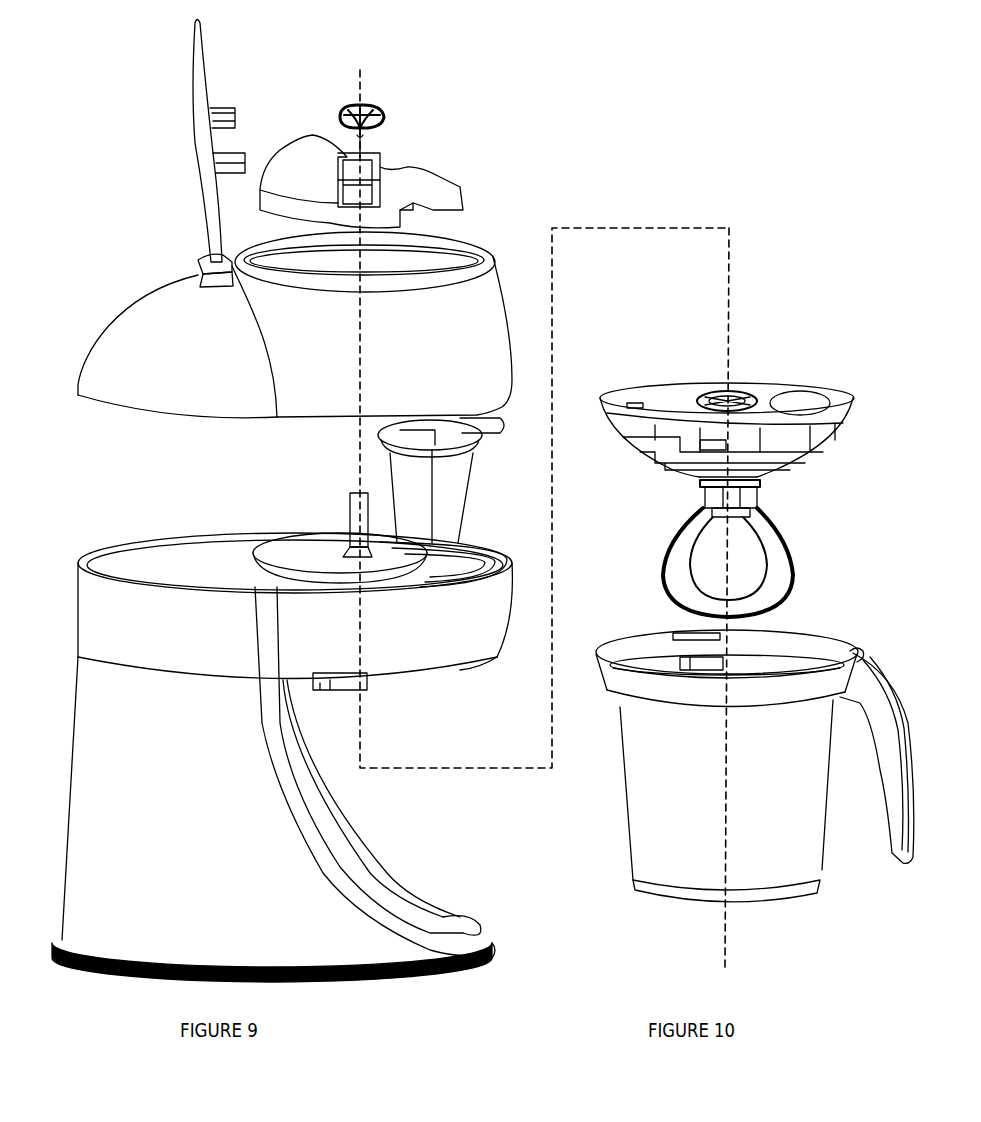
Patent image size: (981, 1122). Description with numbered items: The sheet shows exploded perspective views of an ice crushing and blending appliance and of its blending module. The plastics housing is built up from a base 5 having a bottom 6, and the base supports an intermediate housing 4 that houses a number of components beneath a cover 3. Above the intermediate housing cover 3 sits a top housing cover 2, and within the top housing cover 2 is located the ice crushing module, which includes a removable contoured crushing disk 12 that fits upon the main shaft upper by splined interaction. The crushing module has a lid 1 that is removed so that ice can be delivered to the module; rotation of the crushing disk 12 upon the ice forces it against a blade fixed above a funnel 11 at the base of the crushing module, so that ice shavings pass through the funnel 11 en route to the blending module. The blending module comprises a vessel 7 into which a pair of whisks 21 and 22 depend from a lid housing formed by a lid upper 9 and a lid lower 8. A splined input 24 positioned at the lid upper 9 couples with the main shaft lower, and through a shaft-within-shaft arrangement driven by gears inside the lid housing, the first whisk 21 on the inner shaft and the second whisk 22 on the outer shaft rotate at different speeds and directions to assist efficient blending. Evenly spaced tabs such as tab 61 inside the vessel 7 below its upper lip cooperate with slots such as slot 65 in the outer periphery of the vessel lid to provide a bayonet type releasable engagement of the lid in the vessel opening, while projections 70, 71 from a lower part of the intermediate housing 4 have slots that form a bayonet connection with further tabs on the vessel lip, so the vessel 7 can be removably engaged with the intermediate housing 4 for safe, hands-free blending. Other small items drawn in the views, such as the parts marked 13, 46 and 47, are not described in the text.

In FIG. 9, the lid 1 is at (212, 165).
In FIG. 9, the top housing cover 2 is at (277, 340).
In FIG. 9, the cover 3 is at (280, 555).
In FIG. 9, the intermediate housing 4 is at (187, 635).
In FIG. 9, the base 5 is at (170, 827).
In FIG. 9, the bottom 6 is at (466, 932).
In FIG. 10, the vessel 7 is at (693, 822).
In FIG. 10, the lid lower 8 is at (750, 462).
In FIG. 10, the lid upper 9 is at (662, 407).
In FIG. 9, the funnel 11 is at (447, 487).
In FIG. 9, the crushing disk 12 is at (413, 187).
In FIG. 9, the knob 13 is at (375, 110).
In FIG. 10, the first whisk 21 is at (763, 585).
In FIG. 10, the second whisk 22 is at (790, 530).
In FIG. 10, the splined input 24 is at (750, 380).
In FIG. 9, the pin 46 is at (348, 545).
In FIG. 9, the inner tube 47 is at (347, 157).
In FIG. 10, the tab 61 is at (695, 667).
In FIG. 10, the slot 65 is at (713, 447).
In FIG. 9, the projection 70 is at (473, 667).
In FIG. 9, the projection 71 is at (350, 690).